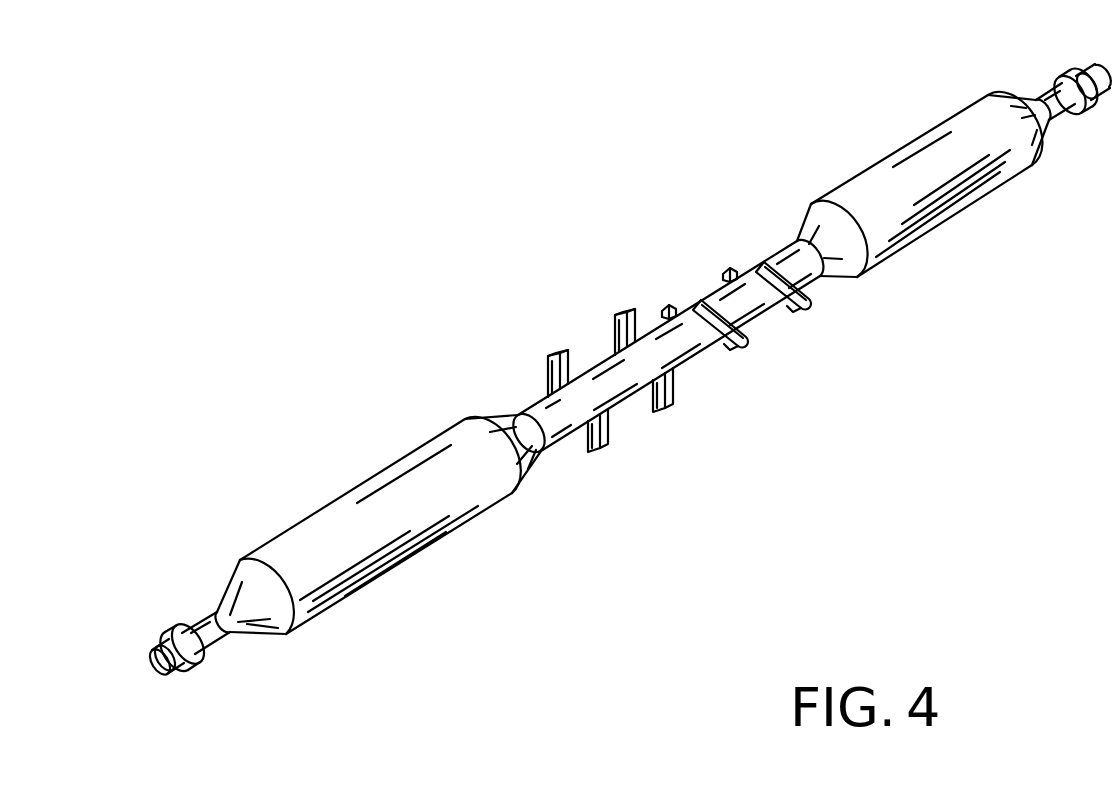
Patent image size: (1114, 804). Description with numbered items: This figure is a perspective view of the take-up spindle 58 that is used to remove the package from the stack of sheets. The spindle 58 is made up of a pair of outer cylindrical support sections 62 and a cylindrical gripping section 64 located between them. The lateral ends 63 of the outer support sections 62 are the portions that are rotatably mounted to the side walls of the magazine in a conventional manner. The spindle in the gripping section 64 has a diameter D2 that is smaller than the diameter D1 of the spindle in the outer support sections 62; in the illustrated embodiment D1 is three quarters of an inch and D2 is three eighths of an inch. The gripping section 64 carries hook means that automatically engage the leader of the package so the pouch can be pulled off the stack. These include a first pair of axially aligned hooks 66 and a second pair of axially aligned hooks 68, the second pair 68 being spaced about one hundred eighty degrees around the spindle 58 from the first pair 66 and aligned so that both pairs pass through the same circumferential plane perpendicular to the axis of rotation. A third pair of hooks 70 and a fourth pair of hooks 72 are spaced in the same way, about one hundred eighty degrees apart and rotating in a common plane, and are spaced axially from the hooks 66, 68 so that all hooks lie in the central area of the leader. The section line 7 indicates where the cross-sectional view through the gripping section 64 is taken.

The take-up spindle 58 is at (352, 412).
The outer cylindrical support sections 62 is at (391, 470).
The lateral ends 63 is at (204, 623).
The gripping section 64 is at (592, 364).
The first pair of axially aligned hooks 66 is at (554, 370).
The second pair of axially aligned hooks 68 is at (598, 452).
The third pair of hooks 70 is at (660, 312).
The fourth pair of hooks 72 is at (742, 347).
The diameter of spindle in outer support sections D1 is at (363, 586).
The diameter of spindle in gripping section D2 is at (555, 442).
The section line 7- 7 is at (597, 533).